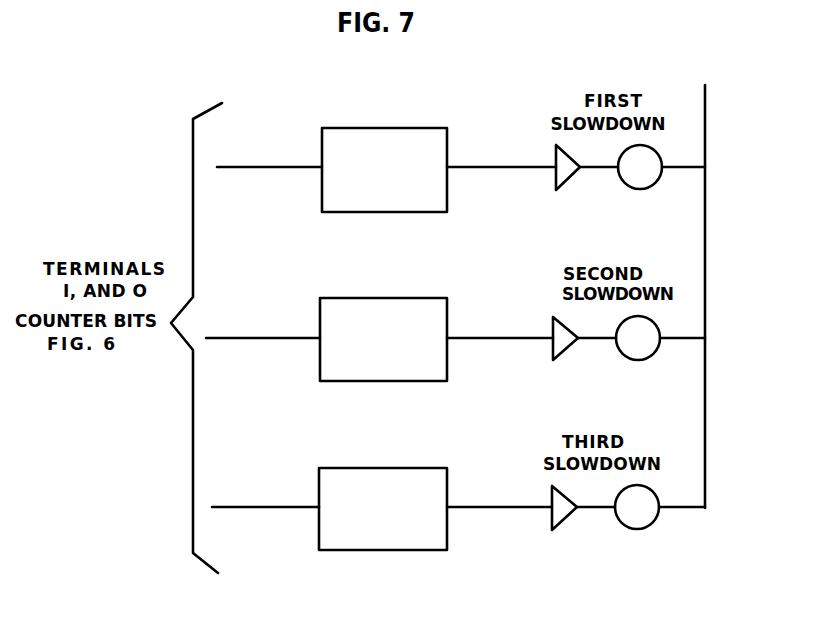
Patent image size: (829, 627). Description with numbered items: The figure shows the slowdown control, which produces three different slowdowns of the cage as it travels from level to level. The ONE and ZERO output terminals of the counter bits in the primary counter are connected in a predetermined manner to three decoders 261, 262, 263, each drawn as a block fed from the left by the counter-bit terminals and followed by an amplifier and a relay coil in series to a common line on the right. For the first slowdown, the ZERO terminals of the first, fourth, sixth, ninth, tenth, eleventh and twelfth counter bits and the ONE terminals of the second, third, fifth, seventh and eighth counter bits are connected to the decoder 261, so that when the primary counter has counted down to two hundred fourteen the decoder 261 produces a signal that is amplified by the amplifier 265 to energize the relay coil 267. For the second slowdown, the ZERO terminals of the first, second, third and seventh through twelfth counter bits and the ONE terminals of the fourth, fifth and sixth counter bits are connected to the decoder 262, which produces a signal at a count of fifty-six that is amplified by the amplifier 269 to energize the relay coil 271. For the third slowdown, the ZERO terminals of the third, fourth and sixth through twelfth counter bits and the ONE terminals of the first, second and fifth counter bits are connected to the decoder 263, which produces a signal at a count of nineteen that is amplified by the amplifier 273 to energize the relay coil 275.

The decoder 261 is at (373, 212).
The decoder 262 is at (437, 381).
The decoder 263 is at (445, 550).
The amplifier 265 is at (569, 179).
The relay coil 267 is at (651, 188).
The amplifier 269 is at (566, 350).
The relay coil 271 is at (641, 361).
The amplifier 273 is at (566, 519).
The relay coil 275 is at (643, 531).